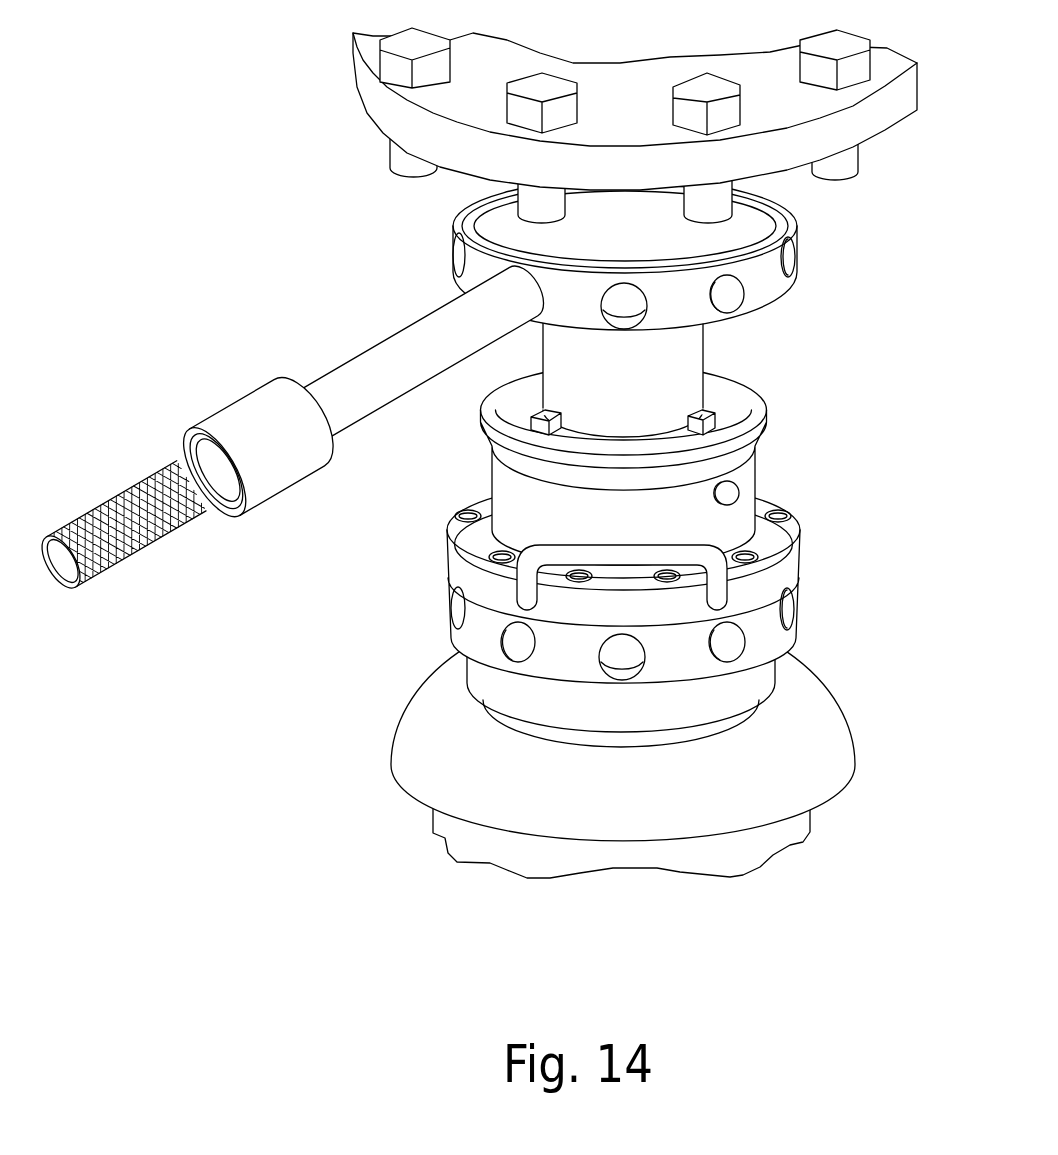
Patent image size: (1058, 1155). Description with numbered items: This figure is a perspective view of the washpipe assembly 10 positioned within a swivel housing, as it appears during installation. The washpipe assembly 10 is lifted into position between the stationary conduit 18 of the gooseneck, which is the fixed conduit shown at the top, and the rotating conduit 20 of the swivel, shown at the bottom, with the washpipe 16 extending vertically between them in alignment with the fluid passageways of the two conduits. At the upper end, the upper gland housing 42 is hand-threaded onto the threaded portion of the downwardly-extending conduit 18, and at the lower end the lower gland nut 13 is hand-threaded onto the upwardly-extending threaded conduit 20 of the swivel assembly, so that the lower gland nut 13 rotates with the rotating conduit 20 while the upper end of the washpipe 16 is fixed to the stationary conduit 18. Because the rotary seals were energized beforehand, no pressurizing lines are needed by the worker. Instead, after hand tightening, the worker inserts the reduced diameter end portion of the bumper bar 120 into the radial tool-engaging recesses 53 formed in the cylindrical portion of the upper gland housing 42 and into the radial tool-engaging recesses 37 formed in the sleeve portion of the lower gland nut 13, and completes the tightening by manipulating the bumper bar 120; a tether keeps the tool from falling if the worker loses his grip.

The washpipe assembly 10 is at (478, 453).
The lower gland nut 13 is at (684, 524).
The washpipe 16 is at (688, 373).
The fixed conduit 18 is at (433, 140).
The rotating conduit 20 is at (720, 722).
The radial tool-engaging recesses 37 is at (790, 605).
The upper gland housing 42 is at (667, 266).
The radial tool-engaging recesses 53 is at (733, 306).
The bumper bar 120 is at (362, 368).